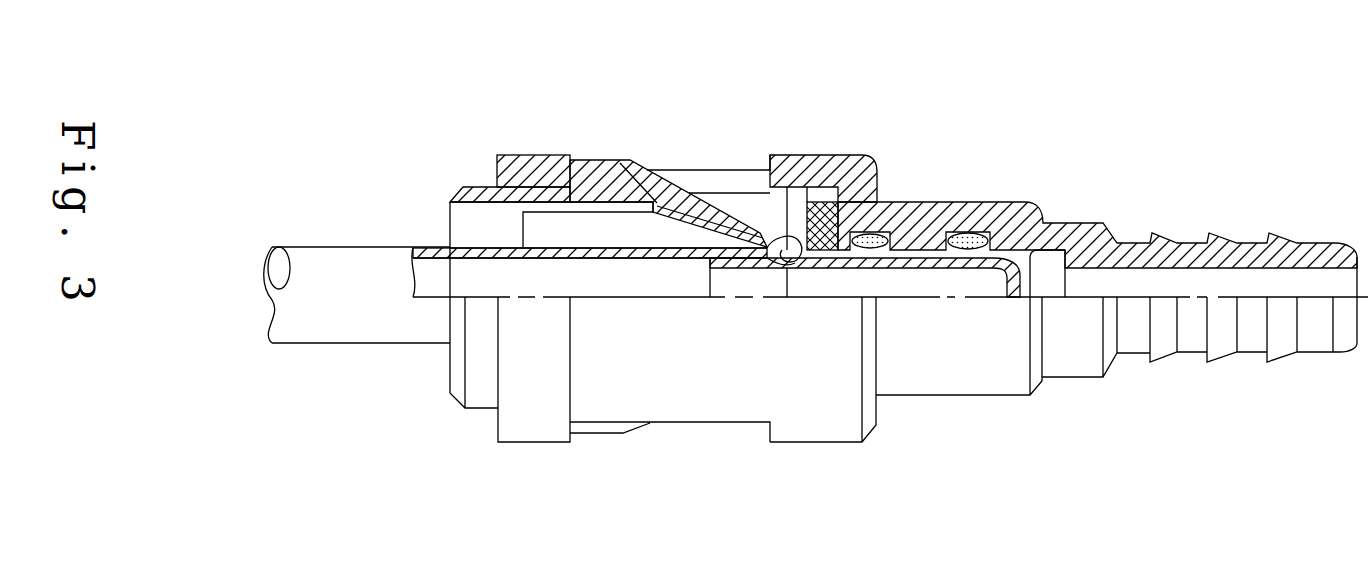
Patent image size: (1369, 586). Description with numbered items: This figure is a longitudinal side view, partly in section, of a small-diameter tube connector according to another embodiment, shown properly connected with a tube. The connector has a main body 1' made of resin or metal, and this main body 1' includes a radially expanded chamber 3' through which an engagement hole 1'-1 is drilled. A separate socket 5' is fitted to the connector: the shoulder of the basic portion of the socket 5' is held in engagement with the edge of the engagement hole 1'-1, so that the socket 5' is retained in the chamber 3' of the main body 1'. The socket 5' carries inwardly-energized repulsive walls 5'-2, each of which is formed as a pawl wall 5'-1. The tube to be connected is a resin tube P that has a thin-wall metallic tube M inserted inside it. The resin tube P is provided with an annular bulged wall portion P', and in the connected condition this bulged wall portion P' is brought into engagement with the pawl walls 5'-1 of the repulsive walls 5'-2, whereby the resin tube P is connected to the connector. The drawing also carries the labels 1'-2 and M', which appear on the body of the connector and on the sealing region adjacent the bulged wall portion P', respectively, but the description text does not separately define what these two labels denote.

The resin tube P is at (357, 232).
The annular bulged wall portion P' is at (850, 174).
The main body 1' is at (1033, 283).
The engagement hole 1'-1 is at (762, 141).
The nut portion of body 1'-2 is at (596, 237).
The radially expanded chamber 3' is at (588, 140).
The socket 5' is at (523, 160).
The pawl wall 5'-1 is at (668, 140).
The inwardly-energized repulsive wall 5'-2 is at (590, 303).
The thin-wall metallic tube M is at (1003, 206).
The packing seal M' is at (895, 186).